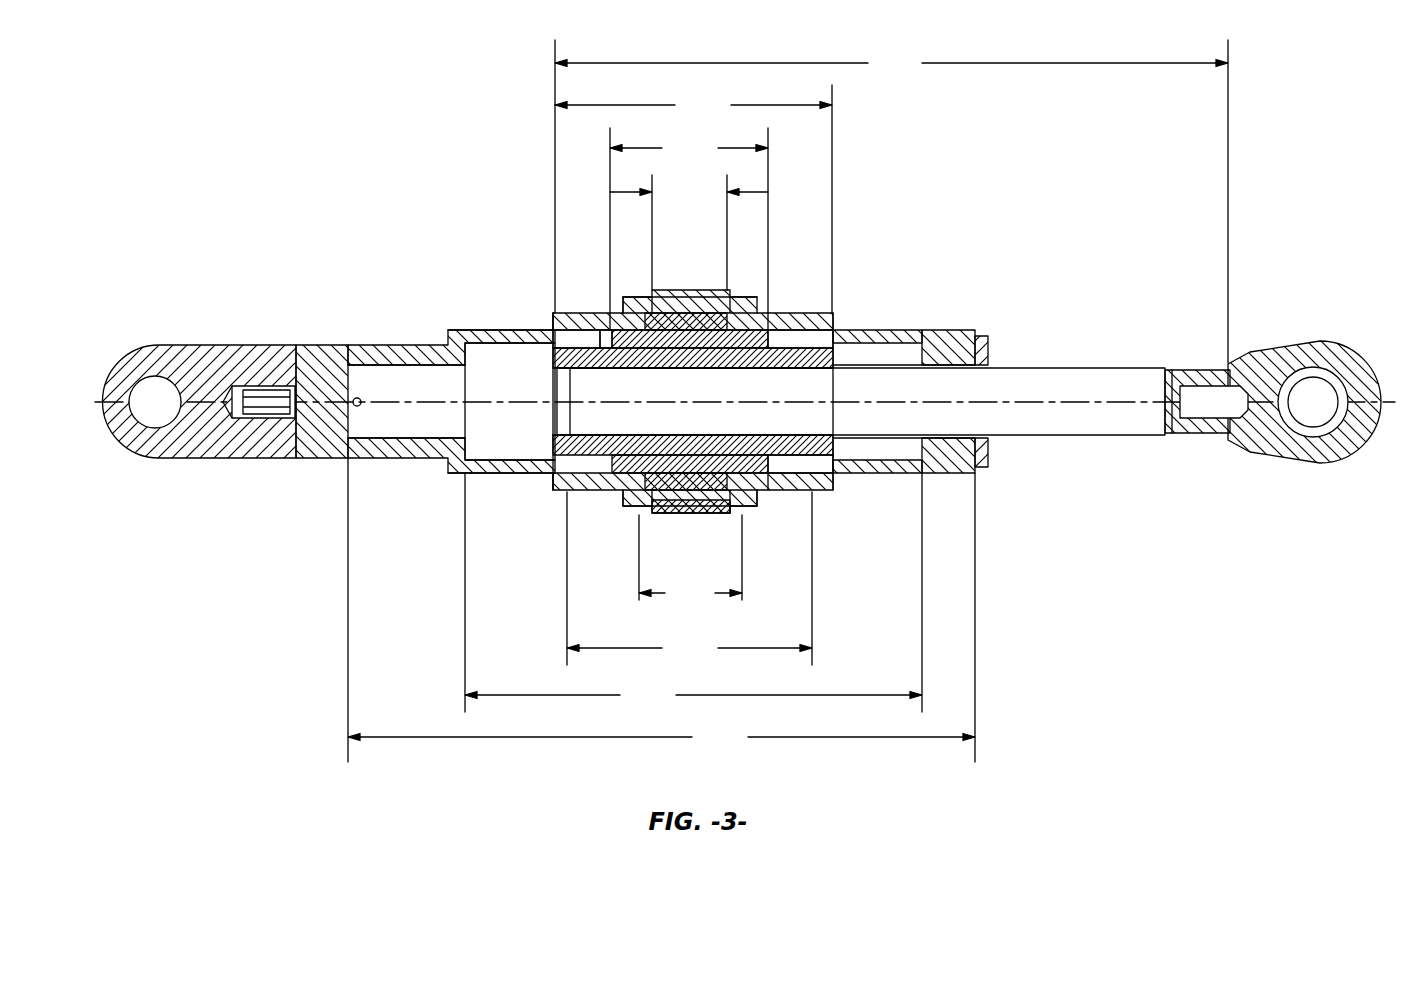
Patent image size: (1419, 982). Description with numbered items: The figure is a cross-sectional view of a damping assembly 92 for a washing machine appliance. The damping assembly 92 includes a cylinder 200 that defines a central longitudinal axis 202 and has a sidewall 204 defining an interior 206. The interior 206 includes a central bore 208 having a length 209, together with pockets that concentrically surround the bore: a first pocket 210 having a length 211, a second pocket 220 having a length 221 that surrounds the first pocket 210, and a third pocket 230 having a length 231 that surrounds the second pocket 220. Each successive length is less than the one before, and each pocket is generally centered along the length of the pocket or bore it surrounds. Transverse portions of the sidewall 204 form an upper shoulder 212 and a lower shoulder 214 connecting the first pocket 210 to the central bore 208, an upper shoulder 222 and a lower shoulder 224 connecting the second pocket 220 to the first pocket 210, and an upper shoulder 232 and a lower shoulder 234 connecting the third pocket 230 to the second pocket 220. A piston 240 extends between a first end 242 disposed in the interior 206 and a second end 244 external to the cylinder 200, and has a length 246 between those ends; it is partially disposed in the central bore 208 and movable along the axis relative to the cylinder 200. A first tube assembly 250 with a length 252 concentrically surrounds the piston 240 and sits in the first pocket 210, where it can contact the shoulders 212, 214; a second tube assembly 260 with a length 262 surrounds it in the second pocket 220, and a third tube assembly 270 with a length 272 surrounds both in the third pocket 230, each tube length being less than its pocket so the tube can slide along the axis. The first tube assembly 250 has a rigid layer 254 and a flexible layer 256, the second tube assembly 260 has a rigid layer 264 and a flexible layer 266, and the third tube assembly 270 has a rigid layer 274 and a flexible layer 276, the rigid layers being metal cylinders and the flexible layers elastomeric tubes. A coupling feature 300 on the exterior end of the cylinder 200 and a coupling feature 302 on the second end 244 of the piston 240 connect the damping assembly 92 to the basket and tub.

The damping assembly 92 is at (340, 184).
The cylinder 200 is at (700, 276).
The central longitudinal axis 202 is at (380, 455).
The sidewall 204 is at (790, 318).
The interior 206 is at (490, 412).
The central bore 208 is at (428, 434).
The length of central bore 209 is at (661, 610).
The first pocket 210 is at (415, 382).
The length of first pocket 211 is at (693, 592).
The upper shoulder 212 is at (912, 466).
The lower shoulder 214 is at (490, 460).
The second pocket 220 is at (580, 500).
The length of second pocket 221 is at (689, 578).
The upper shoulder 222 is at (798, 494).
The lower shoulder 224 is at (507, 478).
The third pocket 230 is at (705, 500).
The length of third pocket 231 is at (690, 561).
The upper shoulder 232 is at (725, 498).
The lower shoulder 234 is at (650, 516).
The piston 240 is at (1075, 363).
The first end 242 is at (505, 331).
The second end 244 is at (1308, 338).
The length of piston 246 is at (891, 201).
The first tube assembly 250 is at (843, 356).
The length of first tube assembly 252 is at (693, 199).
The rigid layer 254 is at (858, 345).
The flexible layer 256 is at (820, 366).
The second tube assembly 260 is at (818, 338).
The length of second tube assembly 262 is at (689, 229).
The rigid layer 264 is at (585, 347).
The flexible layer 266 is at (575, 352).
The third tube assembly 270 is at (652, 320).
The length of third tube assembly 272 is at (689, 232).
The rigid layer 274 is at (672, 292).
The flexible layer 276 is at (592, 340).
The coupling feature 300 is at (240, 342).
The coupling feature 302 is at (1322, 342).